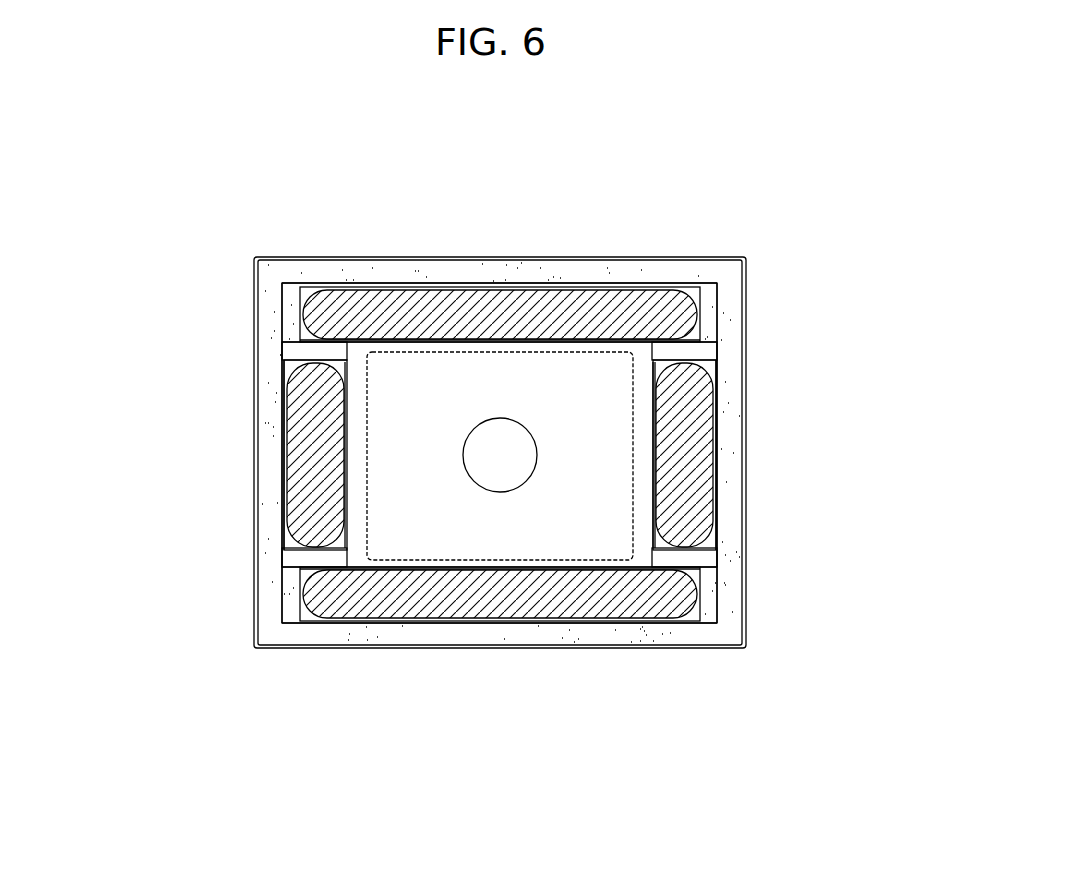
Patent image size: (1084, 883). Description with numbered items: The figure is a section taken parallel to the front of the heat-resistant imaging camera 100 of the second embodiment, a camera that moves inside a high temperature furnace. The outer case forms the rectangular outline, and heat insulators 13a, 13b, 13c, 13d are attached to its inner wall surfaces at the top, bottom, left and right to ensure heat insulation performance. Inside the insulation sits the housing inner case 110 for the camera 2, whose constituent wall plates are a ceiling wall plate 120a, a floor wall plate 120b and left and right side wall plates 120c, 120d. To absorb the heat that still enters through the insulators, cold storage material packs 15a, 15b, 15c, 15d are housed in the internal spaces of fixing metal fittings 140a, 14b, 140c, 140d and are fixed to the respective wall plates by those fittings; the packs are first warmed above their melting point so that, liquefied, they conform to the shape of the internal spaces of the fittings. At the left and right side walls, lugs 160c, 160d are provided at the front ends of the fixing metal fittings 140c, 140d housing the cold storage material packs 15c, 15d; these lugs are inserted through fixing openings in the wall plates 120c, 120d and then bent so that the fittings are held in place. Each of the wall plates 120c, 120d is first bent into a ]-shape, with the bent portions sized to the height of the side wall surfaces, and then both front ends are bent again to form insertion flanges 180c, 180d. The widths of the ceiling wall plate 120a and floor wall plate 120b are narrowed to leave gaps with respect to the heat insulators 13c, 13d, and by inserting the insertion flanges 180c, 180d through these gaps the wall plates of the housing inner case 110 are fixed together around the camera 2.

The heat-resistant imaging camera 100 is at (573, 430).
The camera 2 is at (431, 565).
The housing inner case 110 is at (794, 453).
The heat insulator 13a is at (499, 224).
The heat insulator 13b is at (499, 694).
The heat insulator 13c is at (173, 453).
The heat insulator 13d is at (839, 453).
The fixing metal fitting 140a is at (499, 254).
The fixing metal fitting 14b is at (499, 669).
The fixing metal fitting 140c is at (174, 455).
The fixing metal fitting 140d is at (834, 457).
The cold storage material pack 15a is at (500, 259).
The cold storage material pack 15b is at (500, 672).
The cold storage material pack 15c is at (217, 483).
The cold storage material pack 15d is at (793, 487).
The ceiling wall plate 120a is at (504, 256).
The floor wall plate 120b is at (500, 652).
The constituent wall plate 120c is at (196, 450).
The constituent wall plate 120d is at (805, 455).
The lug 160c is at (197, 443).
The lug 160d is at (803, 447).
The insertion flange 180c is at (212, 322).
The insertion flange 180d is at (783, 320).